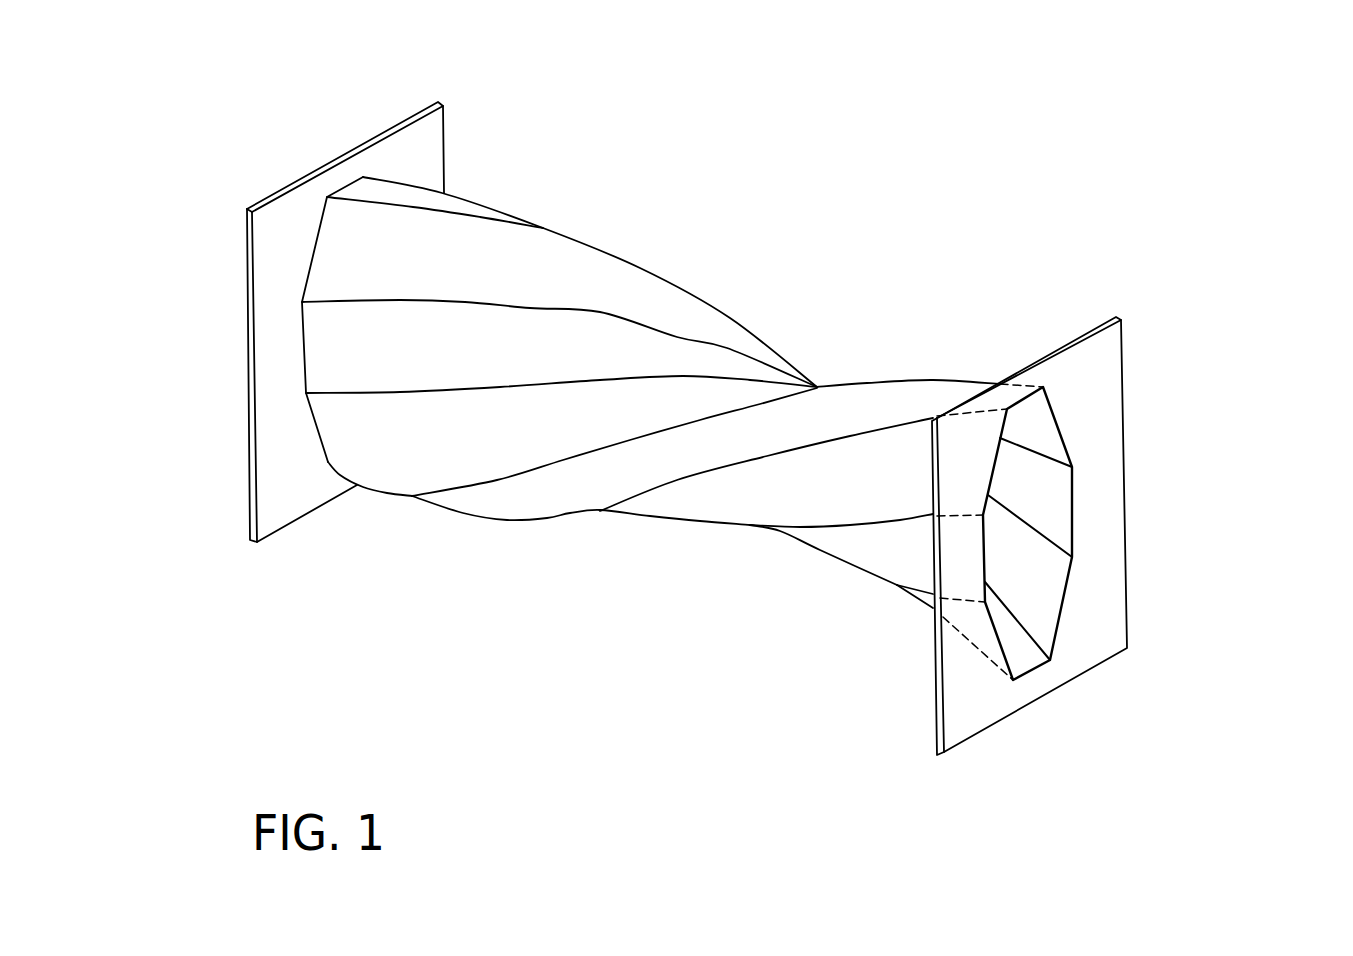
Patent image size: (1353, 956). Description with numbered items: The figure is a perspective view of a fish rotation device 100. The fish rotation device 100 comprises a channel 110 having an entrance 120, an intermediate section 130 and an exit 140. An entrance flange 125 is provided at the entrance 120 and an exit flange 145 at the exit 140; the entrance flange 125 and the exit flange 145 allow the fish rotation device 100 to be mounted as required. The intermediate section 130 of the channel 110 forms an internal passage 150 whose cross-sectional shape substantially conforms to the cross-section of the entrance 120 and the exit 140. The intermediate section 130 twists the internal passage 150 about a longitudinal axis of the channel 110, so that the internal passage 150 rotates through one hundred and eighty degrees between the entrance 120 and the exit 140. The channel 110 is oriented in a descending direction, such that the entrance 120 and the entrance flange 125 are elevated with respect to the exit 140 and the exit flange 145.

The fish rotation device 100 is at (903, 114).
The channel 110 is at (492, 207).
The entrance 120 is at (325, 163).
The entrance flange 125 is at (438, 100).
The intermediate section 130 is at (728, 308).
The exit 140 is at (1033, 668).
The exit flange 145 is at (940, 752).
The internal passage 150 is at (1040, 495).